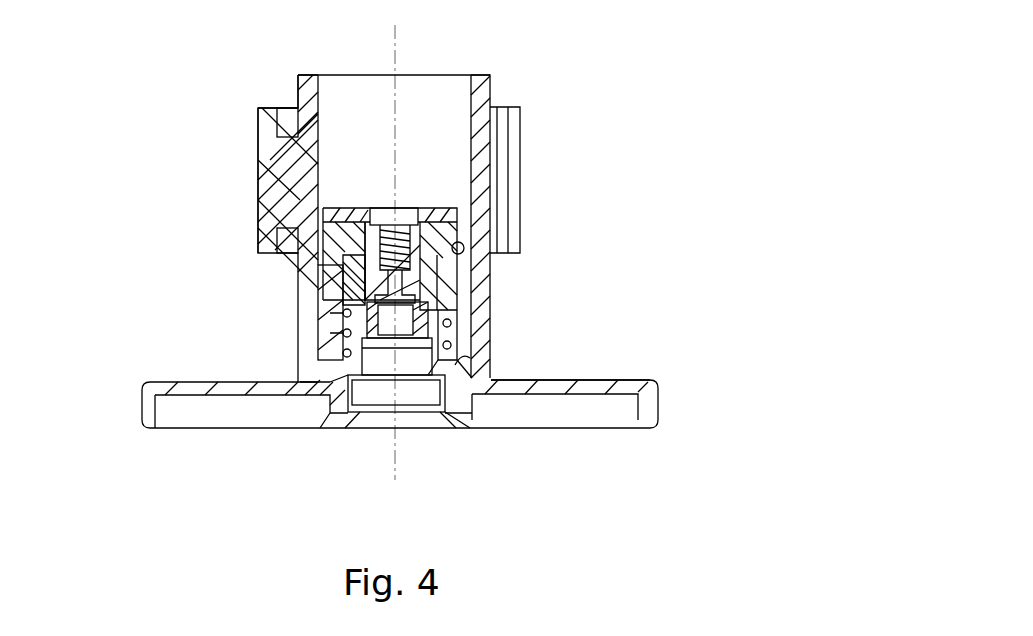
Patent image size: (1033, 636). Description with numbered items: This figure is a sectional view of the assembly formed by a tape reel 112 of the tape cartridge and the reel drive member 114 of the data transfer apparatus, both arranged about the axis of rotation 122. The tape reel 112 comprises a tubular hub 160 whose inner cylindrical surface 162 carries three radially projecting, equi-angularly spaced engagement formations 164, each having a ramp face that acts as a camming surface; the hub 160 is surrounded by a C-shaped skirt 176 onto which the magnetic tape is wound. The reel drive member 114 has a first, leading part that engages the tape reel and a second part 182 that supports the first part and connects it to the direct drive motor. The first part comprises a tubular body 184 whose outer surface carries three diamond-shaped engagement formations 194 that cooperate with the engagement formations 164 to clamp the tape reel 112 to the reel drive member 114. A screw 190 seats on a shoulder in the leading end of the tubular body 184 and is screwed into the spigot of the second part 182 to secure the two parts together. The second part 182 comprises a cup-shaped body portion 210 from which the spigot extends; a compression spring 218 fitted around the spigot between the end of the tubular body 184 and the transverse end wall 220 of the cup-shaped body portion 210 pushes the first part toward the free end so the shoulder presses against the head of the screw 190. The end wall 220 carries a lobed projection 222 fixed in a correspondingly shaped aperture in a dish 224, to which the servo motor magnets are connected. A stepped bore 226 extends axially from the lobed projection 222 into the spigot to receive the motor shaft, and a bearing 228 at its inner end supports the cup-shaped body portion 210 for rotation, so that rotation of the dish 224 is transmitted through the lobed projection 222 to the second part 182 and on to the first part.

The tape reel 112 is at (492, 82).
The reel drive member 114 is at (598, 253).
The axis of rotation 122 is at (394, 62).
The tubular hub 160 is at (297, 92).
The inner cylindrical surface 162 is at (478, 85).
The engagement formations 164 is at (464, 246).
The C-shaped skirt 176 is at (257, 139).
The second part 182 is at (313, 390).
The tubular body 184 is at (326, 292).
The screw 190 is at (460, 273).
The engagement formations 194 is at (327, 228).
The cup-shaped body portion 210 is at (350, 295).
The compression spring 218 is at (452, 323).
The transverse end wall 220 is at (470, 355).
The lobed projection 222 is at (458, 402).
The dish 224 is at (652, 400).
The stepped bore 226 is at (378, 395).
The bearing 228 is at (343, 335).